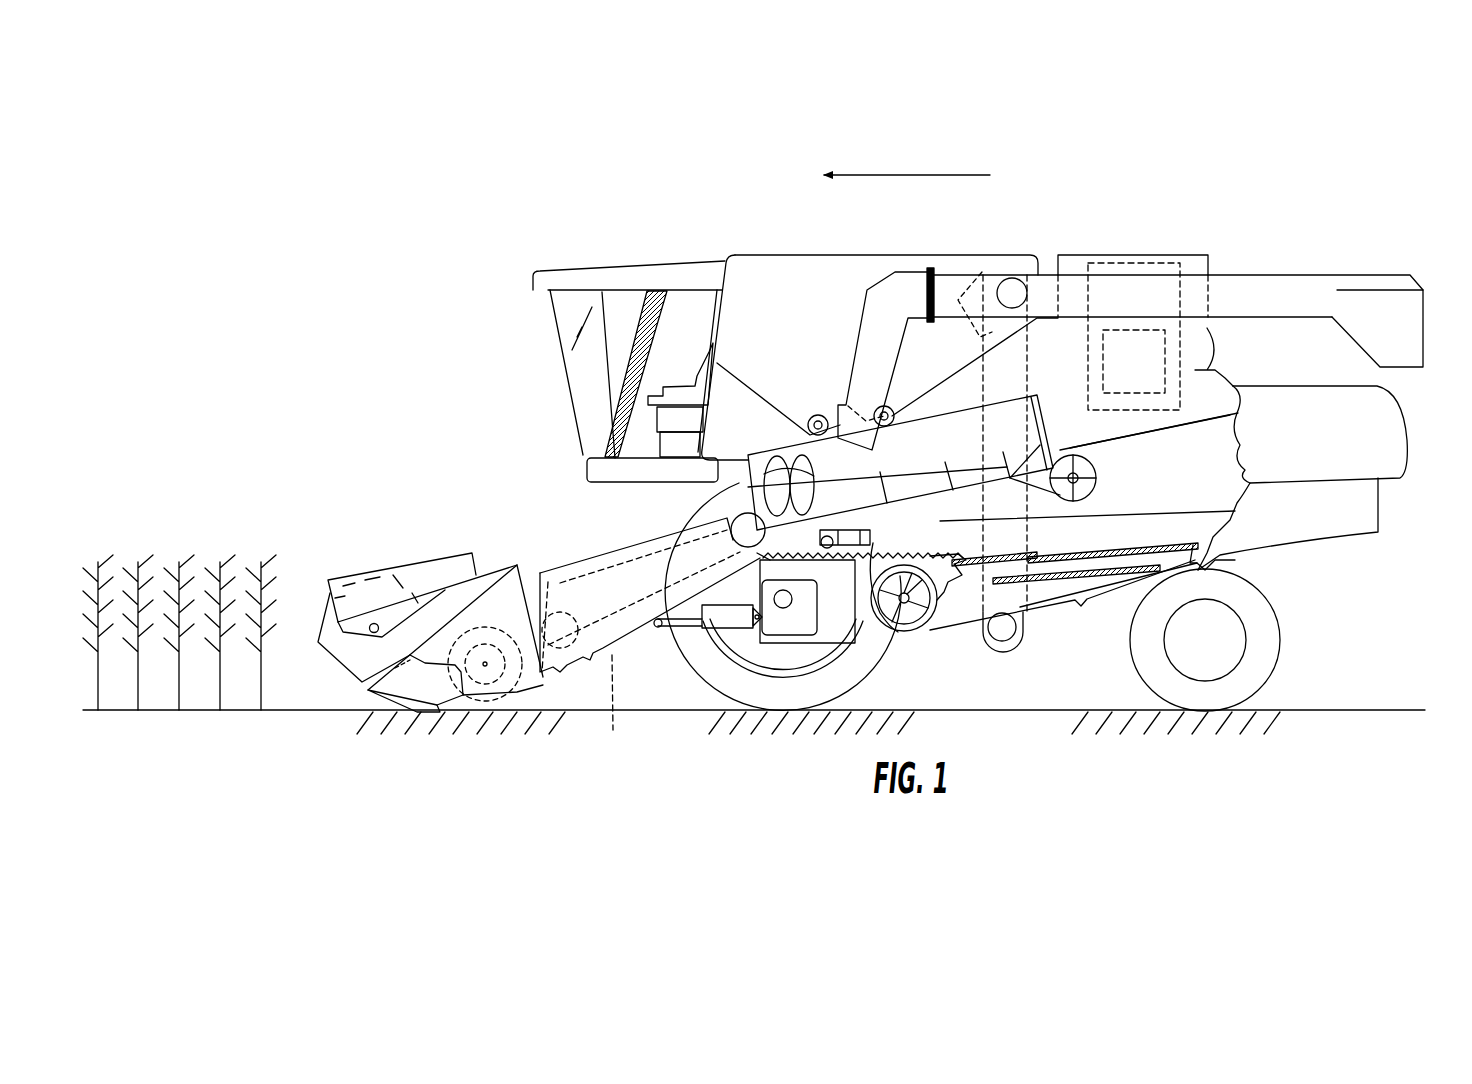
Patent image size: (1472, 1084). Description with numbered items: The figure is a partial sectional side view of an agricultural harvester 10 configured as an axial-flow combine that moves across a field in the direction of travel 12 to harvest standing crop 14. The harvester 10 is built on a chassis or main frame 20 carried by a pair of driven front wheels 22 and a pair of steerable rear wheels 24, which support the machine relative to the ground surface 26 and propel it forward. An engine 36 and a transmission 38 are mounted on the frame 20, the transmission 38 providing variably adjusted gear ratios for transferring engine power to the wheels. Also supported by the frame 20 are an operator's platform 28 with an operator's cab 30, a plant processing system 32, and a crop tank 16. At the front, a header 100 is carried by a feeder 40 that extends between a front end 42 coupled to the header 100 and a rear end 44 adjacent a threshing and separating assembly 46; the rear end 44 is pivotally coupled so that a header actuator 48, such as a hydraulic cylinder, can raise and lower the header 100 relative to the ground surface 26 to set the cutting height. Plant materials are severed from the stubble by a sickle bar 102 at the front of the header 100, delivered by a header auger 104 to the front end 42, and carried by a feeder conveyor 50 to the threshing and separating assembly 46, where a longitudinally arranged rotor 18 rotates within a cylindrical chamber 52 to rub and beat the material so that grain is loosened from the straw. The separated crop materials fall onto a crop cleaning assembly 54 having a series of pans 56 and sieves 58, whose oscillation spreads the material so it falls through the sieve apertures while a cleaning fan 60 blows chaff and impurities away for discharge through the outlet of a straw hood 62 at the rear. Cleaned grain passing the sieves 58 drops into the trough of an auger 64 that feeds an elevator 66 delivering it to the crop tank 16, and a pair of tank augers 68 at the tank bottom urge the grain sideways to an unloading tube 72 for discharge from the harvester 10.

The agricultural harvester 10 is at (592, 225).
The direction of travel 12 is at (925, 173).
The standing crop 14 is at (153, 508).
The crop tank 16 is at (812, 256).
The rotor 18 is at (778, 468).
The chassis or main frame 20 is at (1222, 560).
The front wheels 22 is at (725, 680).
The rear wheels 24 is at (1270, 652).
The ground surface 26 is at (1363, 710).
The operator's platform 28 is at (623, 371).
The operator's cab 30 is at (580, 367).
The plant processing system 32 is at (1138, 477).
The engine 36 is at (1168, 303).
The transmission 38 is at (1180, 350).
The feeder 40 is at (442, 634).
The front end 42 is at (510, 618).
The rear end 44 is at (727, 492).
The threshing and separating assembly 46 is at (916, 438).
The header actuator 48 is at (720, 622).
The feeder conveyor 50 is at (641, 647).
The cylindrical chamber 52 is at (943, 422).
The crop cleaning assembly 54 is at (973, 637).
The pans 56 is at (903, 565).
The sieves 58 is at (1030, 552).
The cleaning fan 60 is at (900, 630).
The straw hood 62 is at (1396, 452).
The auger 64 is at (1003, 634).
The elevator 66 is at (1032, 355).
The tank augers 68 is at (825, 413).
The unloading tube 72 is at (1265, 290).
The header 100 is at (364, 556).
The sickle bar 102 is at (373, 693).
The header auger 104 is at (512, 700).